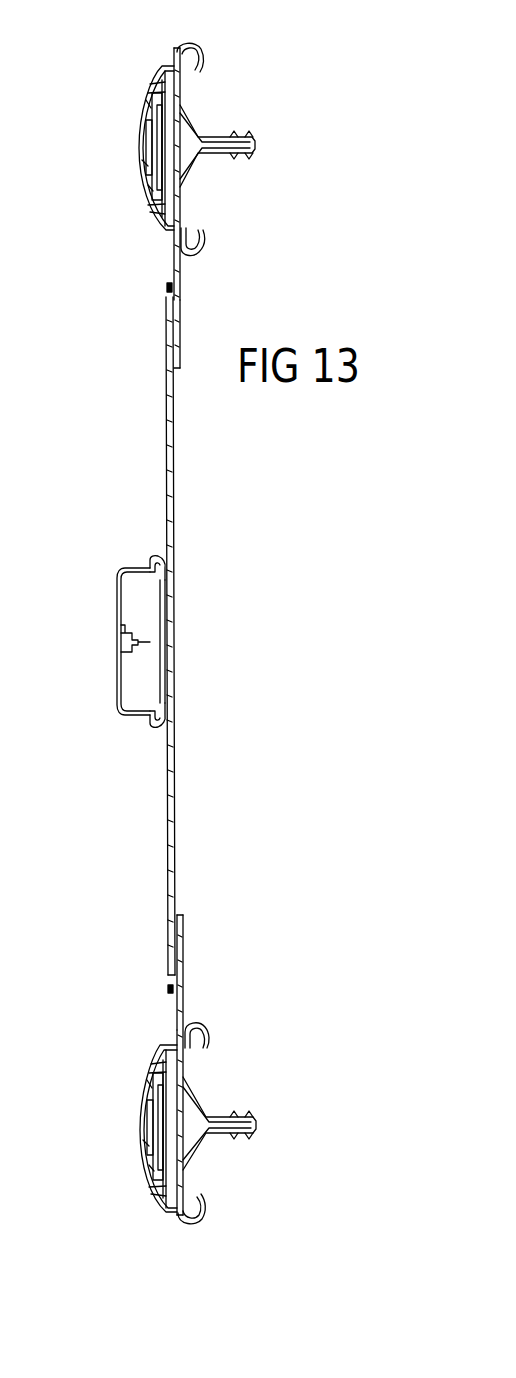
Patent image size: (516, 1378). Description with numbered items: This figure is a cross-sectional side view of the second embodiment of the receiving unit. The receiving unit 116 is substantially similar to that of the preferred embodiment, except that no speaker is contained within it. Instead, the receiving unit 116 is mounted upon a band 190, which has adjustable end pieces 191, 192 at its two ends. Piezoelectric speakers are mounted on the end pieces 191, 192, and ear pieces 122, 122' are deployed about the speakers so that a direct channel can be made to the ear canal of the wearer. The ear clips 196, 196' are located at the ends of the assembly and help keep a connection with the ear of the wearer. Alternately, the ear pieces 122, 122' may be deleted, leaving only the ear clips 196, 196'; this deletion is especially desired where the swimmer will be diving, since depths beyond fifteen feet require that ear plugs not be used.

The receiving unit 116 is at (118, 643).
The ear piece 122 is at (240, 1065).
The ear piece 122' is at (241, 197).
The band 190 is at (168, 442).
The adjustable end piece 191 is at (175, 1008).
The adjustable end piece 192 is at (177, 272).
The ear clip 196 is at (237, 1229).
The ear clip 196' is at (253, 50).